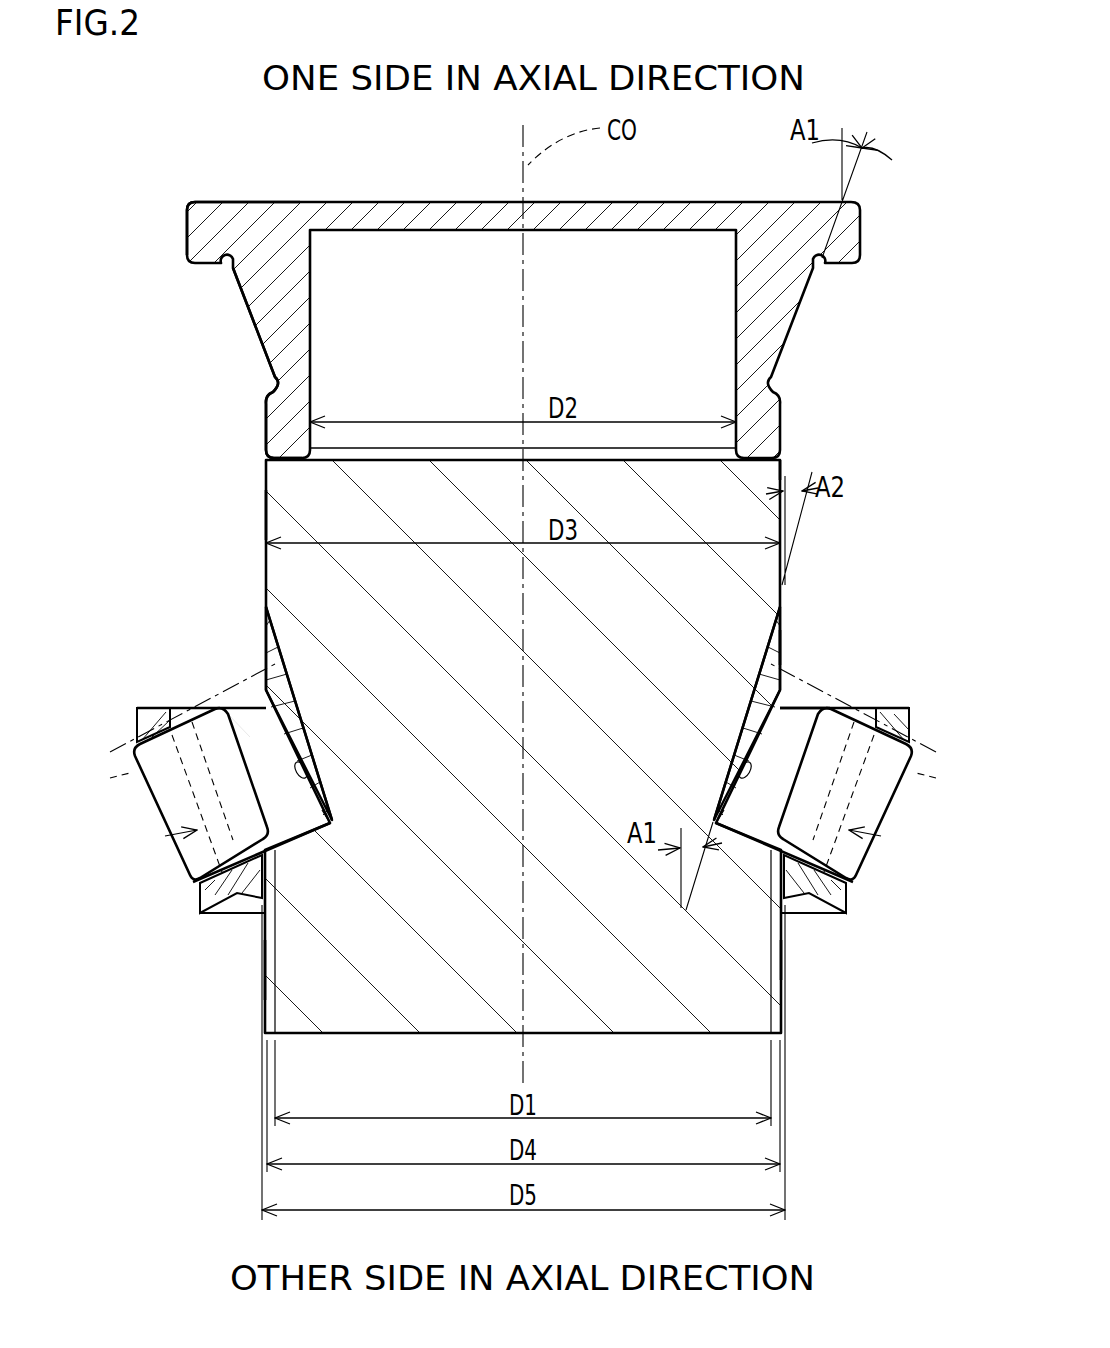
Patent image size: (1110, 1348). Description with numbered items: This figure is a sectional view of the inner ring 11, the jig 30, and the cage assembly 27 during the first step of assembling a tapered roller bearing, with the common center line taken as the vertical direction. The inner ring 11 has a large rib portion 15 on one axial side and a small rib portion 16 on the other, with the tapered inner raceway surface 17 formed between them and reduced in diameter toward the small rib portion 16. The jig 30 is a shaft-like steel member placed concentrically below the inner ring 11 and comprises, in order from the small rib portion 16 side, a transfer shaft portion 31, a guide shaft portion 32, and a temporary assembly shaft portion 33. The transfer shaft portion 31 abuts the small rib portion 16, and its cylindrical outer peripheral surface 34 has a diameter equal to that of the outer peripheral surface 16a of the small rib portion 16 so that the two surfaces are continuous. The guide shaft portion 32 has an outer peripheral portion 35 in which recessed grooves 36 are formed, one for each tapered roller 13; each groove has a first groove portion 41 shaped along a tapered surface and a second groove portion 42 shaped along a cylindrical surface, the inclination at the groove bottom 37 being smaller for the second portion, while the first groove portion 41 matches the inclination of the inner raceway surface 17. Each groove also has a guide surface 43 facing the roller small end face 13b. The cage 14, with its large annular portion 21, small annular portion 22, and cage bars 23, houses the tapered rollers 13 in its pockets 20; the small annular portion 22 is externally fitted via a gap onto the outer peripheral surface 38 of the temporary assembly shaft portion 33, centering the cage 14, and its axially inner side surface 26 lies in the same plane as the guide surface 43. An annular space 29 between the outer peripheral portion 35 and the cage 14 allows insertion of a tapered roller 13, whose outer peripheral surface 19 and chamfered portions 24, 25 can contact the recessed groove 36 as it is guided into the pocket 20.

The inner ring 11 is at (244, 196).
The tapered roller 13 is at (130, 757).
The roller small end face 13b is at (335, 824).
The cage 14 is at (505, 805).
The large rib portion 15 is at (210, 232).
The small rib portion 16 is at (282, 403).
The outer peripheral surface of the small rib portion 16a is at (265, 440).
The inner raceway surface 17 is at (248, 320).
The outer peripheral surface of the tapered roller 19 is at (310, 724).
The pocket 20 is at (168, 840).
The large annular portion 21 is at (151, 710).
The small annular portion 22 is at (215, 913).
The cage bar 23 is at (155, 792).
The chamfered portion 24 is at (215, 707).
The chamfered portion 25 is at (277, 857).
The axially inner side surface 26 is at (202, 893).
The cage assembly 27 is at (910, 712).
The annular space 29 is at (795, 712).
The jig 30 is at (666, 1038).
The transfer shaft portion 31 is at (785, 462).
The guide shaft portion 32 is at (786, 648).
The temporary assembly shaft portion 33 is at (786, 962).
The outer peripheral surface of the transfer shaft portion 34 is at (265, 512).
The outer peripheral portion of the guide shaft portion 35 is at (292, 690).
The recessed groove 36 is at (452, 686).
The groove bottom 37 is at (307, 770).
The outer peripheral surface of the temporary assembly shaft portion 38 is at (264, 968).
The first groove portion 41 is at (283, 690).
The second groove portion 42 is at (278, 645).
The guide surface 43 is at (288, 848).